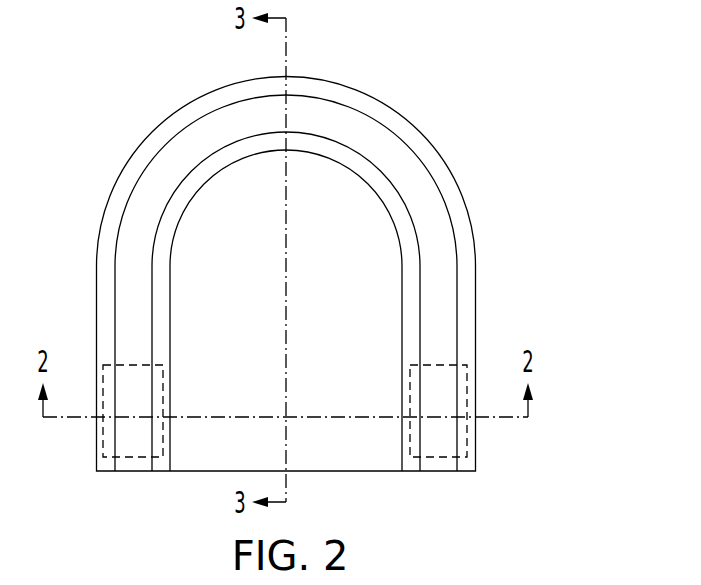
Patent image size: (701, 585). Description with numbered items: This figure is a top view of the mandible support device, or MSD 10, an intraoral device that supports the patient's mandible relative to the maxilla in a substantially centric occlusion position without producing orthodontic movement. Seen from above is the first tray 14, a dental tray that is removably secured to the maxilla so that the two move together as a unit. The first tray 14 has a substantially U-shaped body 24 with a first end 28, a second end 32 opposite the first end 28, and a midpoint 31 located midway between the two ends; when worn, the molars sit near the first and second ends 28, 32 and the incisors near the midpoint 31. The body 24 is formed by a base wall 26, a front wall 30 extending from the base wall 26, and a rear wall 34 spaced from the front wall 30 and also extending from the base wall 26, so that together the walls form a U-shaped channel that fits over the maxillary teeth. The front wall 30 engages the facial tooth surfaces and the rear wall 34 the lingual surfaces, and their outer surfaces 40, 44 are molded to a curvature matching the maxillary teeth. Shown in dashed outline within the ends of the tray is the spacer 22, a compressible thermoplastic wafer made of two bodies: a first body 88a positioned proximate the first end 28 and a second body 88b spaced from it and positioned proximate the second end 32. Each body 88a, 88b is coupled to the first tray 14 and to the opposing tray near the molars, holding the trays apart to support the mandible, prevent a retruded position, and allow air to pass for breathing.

The mandible support device (MSD) 10 is at (530, 107).
The first tray 14 is at (430, 213).
The spacer 22 is at (135, 458).
The body 24 is at (177, 162).
The base wall 26 is at (133, 330).
The first end 28 is at (170, 458).
The front wall 30 is at (105, 248).
The midpoint 31 is at (335, 82).
The second end 32 is at (477, 458).
The rear wall 34 is at (168, 225).
The outer surface of front wall 40 is at (428, 130).
The outer surface of rear wall 44 is at (370, 183).
The first body 88a is at (163, 397).
The second body 88b is at (407, 393).